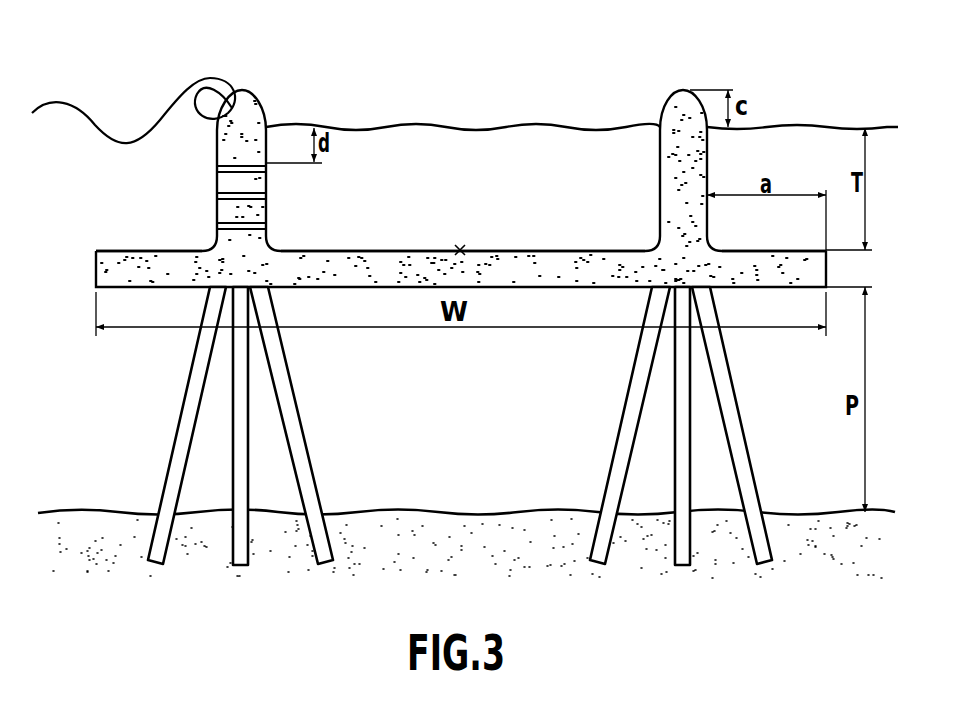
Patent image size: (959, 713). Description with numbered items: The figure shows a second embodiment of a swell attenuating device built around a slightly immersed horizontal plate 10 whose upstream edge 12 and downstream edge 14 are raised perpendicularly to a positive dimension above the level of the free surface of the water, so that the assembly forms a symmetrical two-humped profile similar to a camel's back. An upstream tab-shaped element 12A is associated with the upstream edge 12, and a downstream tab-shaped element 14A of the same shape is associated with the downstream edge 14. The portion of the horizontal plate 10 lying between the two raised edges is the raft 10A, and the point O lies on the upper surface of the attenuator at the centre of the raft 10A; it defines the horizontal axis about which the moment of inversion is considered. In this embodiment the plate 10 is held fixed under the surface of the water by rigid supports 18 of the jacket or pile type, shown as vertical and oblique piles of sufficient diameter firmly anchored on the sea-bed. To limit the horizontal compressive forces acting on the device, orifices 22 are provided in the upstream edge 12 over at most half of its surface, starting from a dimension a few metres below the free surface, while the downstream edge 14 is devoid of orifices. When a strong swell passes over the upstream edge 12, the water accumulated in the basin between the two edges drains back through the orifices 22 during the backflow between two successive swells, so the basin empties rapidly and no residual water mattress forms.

The horizontal plate 10 is at (520, 186).
The raft 10A is at (629, 251).
The upstream edge 12 is at (243, 105).
The upstream tab-shaped element 12A is at (124, 251).
The downstream edge 14 is at (683, 102).
The downstream tab-shaped element 14A is at (767, 251).
The rigid supports 18 is at (243, 432).
The orifices 22 is at (266, 226).
The point on the upper surface of the attenuator O is at (460, 249).